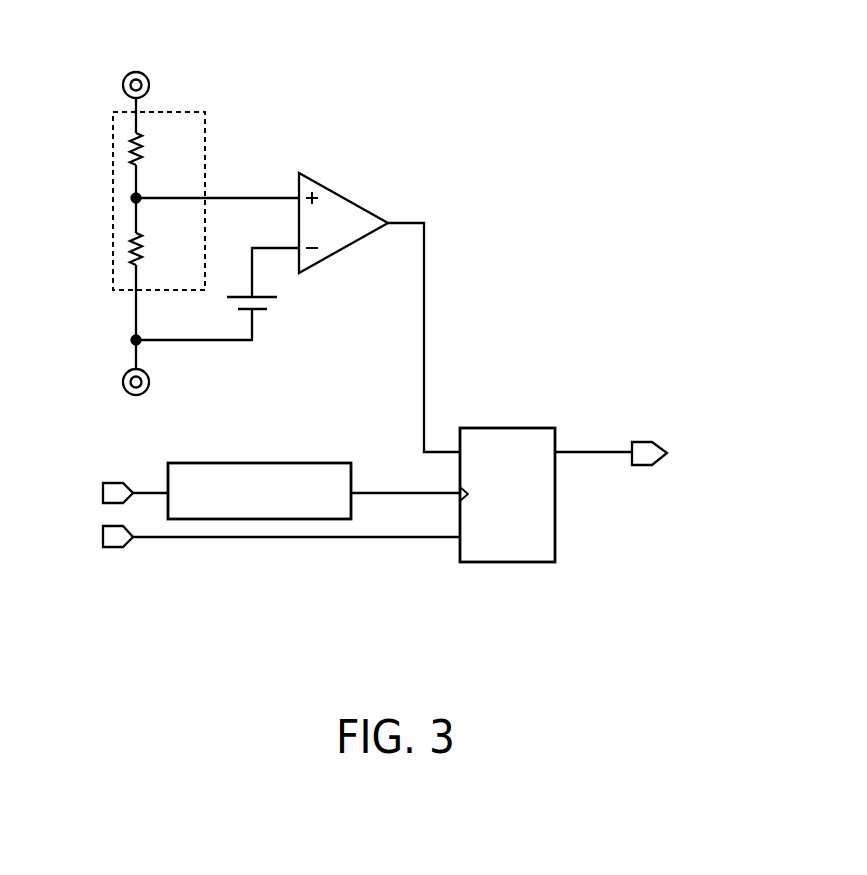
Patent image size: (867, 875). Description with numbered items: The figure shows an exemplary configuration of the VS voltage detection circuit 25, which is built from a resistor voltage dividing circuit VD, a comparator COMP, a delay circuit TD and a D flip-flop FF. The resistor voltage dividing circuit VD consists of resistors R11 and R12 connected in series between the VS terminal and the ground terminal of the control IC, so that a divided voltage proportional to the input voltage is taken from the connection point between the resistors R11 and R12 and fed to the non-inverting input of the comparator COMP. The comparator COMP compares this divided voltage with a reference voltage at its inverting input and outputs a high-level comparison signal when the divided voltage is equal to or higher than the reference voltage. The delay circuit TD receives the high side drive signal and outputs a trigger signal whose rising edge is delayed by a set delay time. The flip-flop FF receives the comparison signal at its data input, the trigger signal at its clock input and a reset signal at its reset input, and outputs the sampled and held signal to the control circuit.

The VS voltage detection circuit 25 is at (556, 112).
The resistor voltage dividing circuit VD is at (197, 112).
The resistor R11 is at (163, 149).
The resistor R12 is at (163, 249).
The comparator COMP is at (350, 198).
The delay circuit TD is at (282, 463).
The D flip-flop FF is at (508, 427).